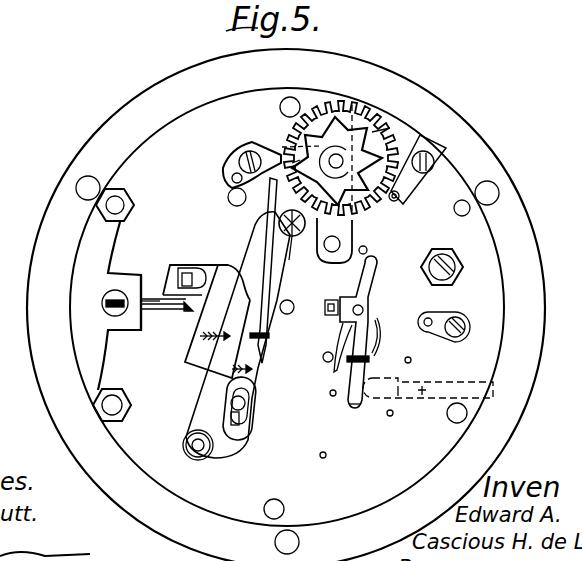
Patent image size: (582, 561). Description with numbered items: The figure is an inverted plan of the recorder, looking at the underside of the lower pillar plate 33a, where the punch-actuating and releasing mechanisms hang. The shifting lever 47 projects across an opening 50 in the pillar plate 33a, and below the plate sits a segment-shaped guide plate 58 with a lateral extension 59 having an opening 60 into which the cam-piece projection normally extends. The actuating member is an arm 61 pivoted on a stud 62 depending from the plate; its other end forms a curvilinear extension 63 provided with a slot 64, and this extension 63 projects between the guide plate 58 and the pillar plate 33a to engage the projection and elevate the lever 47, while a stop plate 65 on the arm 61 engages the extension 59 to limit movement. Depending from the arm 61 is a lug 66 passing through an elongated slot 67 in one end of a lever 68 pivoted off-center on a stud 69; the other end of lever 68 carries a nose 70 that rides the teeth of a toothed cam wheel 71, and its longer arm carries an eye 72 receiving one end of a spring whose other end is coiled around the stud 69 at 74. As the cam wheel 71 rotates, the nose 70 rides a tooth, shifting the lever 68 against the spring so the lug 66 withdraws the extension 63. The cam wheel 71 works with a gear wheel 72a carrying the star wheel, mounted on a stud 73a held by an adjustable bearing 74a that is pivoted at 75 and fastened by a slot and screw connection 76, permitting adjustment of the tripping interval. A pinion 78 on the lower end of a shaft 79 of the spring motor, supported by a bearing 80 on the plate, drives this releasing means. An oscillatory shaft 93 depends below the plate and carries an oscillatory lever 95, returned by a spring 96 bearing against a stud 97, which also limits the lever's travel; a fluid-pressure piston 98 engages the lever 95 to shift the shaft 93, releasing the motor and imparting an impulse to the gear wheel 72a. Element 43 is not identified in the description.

The lower pillar plate 33a is at (170, 445).
The rod 43 is at (265, 270).
The shifting lever 47 is at (176, 316).
The opening 50 is at (167, 314).
The segment-shaped guide plate 58 is at (106, 306).
The lateral extension 59 is at (133, 276).
The opening 60 is at (106, 299).
The arm 61 is at (205, 403).
The stud 62 is at (210, 452).
The extension 63 is at (216, 266).
The slot 64 is at (190, 270).
The stop plate 65 is at (250, 300).
The lug 66 is at (246, 404).
The elongated slot 67 is at (238, 424).
The lever 68 is at (300, 292).
The stud 69 is at (279, 223).
The nose 70 is at (285, 155).
The toothed cam wheel 71 is at (354, 110).
The eye 72 is at (270, 337).
The gear wheel 72a is at (372, 132).
The stud 73a is at (292, 163).
The coil of spring 74 is at (285, 232).
The adjustable bearing 74a is at (353, 228).
The pivot 75 is at (368, 251).
The slot and screw connection 76 is at (238, 168).
The pinion 78 is at (408, 204).
The shaft 79 is at (402, 200).
The bearing 80 is at (431, 154).
The oscillatory shaft 93 is at (372, 303).
The oscillatory lever 95 is at (355, 410).
The spring 96 is at (374, 345).
The stud 97 is at (324, 359).
The piston 98 is at (428, 401).